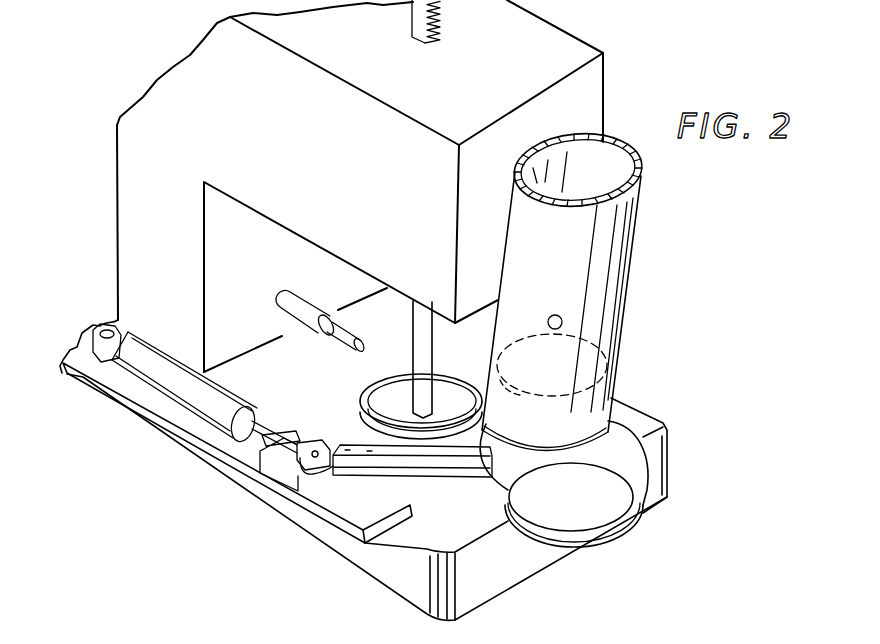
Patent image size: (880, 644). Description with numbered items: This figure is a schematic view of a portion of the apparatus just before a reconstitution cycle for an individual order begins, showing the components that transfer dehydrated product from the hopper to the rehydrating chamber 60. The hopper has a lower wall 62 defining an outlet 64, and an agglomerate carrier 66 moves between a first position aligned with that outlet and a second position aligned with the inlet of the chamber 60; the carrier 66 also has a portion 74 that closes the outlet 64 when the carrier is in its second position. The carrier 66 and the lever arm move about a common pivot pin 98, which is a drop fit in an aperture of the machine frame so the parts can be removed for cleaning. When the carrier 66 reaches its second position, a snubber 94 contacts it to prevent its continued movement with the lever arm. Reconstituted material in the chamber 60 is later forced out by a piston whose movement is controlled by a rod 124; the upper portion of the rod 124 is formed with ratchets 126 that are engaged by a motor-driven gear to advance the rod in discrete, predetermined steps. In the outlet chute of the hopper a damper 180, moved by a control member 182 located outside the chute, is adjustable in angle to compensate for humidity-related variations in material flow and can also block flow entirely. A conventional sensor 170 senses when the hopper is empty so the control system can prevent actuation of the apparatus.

The ratchets 126 is at (442, 32).
The rod 124 is at (411, 303).
The snubber 94 is at (382, 332).
The rehydrating chamber 60 is at (370, 385).
The pivot pin 98 is at (350, 445).
The lower wall 62 is at (616, 298).
The sensor 170 is at (550, 316).
The damper 180 is at (500, 346).
The control member 182 is at (510, 392).
The outlet 64 is at (522, 458).
The agglomerate carrier 66 is at (500, 507).
The closing portion of carrier 74 is at (583, 512).